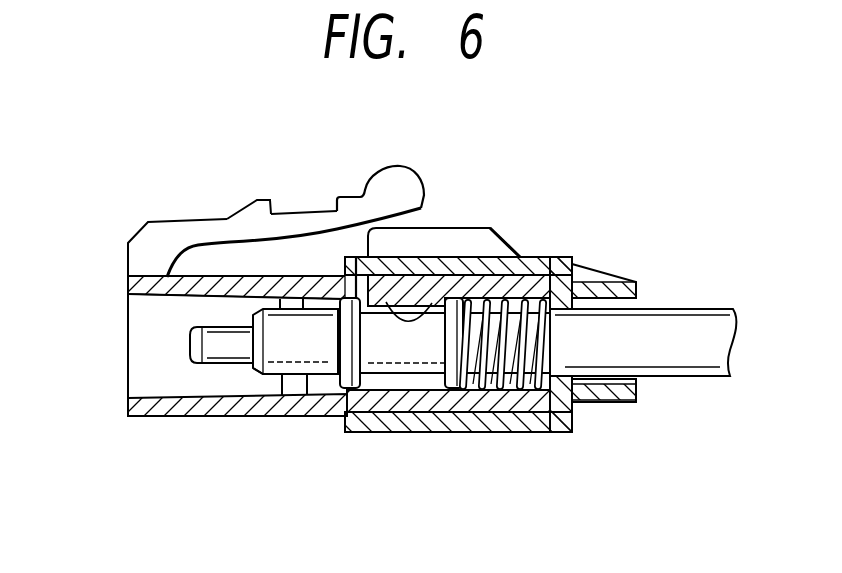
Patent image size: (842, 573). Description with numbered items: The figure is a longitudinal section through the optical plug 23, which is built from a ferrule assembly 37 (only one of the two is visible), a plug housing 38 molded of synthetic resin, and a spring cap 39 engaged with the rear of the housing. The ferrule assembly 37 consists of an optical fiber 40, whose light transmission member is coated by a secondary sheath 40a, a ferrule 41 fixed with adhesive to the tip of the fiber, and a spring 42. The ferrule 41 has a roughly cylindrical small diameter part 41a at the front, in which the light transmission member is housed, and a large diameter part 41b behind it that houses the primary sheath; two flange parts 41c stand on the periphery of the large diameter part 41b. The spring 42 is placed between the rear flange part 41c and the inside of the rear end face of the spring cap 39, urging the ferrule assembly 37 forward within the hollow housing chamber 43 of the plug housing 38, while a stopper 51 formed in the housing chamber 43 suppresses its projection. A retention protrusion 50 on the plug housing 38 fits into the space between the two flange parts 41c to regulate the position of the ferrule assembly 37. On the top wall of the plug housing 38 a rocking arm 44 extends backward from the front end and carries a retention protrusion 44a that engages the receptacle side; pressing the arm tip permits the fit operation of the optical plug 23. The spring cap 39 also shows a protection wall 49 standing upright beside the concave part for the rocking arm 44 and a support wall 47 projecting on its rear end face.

The optical plug 23 is at (547, 189).
The ferrule assembly 37 is at (403, 386).
The plug housing 38 is at (168, 412).
The spring cap 39 is at (578, 418).
The optical fiber 40 is at (717, 306).
The secondary sheath 40a is at (697, 368).
The ferrule 41 is at (240, 379).
The small diameter part 41a is at (188, 343).
The large diameter part 41b is at (273, 377).
The flange part 41c is at (348, 393).
The spring 42 is at (515, 392).
The housing chamber 43 is at (145, 374).
The rocking arm 44 is at (172, 231).
The retention protrusion 44a is at (253, 202).
The support wall 47 is at (637, 283).
The protection wall 49 is at (498, 247).
The retention protrusion 50 is at (432, 303).
The stopper 51 is at (293, 383).